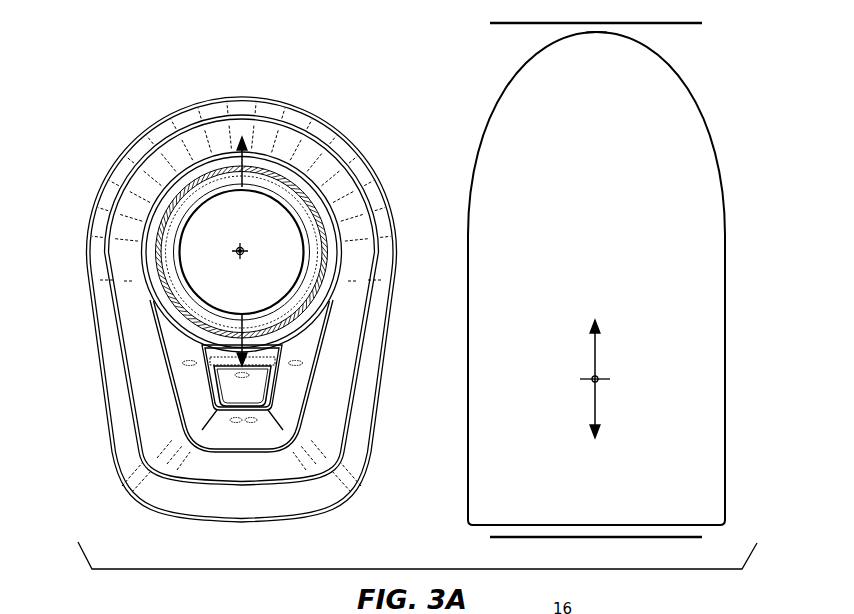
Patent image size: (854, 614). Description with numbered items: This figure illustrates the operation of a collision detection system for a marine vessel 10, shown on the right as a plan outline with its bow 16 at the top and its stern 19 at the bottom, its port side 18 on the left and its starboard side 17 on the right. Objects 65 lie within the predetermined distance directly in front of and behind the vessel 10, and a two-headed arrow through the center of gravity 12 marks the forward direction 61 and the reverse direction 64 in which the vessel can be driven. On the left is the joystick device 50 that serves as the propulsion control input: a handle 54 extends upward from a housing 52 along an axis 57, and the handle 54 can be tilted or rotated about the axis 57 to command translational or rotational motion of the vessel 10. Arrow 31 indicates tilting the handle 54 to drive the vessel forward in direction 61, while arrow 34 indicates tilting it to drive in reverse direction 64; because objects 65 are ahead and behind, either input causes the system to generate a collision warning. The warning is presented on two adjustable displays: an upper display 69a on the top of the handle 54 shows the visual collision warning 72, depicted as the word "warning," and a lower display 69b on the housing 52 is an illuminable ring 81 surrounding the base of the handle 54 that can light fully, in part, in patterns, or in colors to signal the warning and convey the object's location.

The joystick device 50 is at (92, 131).
The handle 54 is at (205, 172).
The housing 52 is at (325, 163).
The arrow 31 is at (257, 159).
The upper display 69a is at (263, 218).
The visual collision warning 72 is at (263, 273).
The axis 57 is at (235, 250).
The lower display 69b is at (157, 213).
The illuminable ring 81 is at (157, 247).
The arrow 34 is at (263, 330).
The marine vessel 10 is at (708, 130).
The bow 16 is at (596, 31).
The objects 65 is at (673, 24).
The left side edge 18 is at (467, 280).
The starboard side 17 is at (726, 280).
The stern 19 is at (588, 527).
The forward direction 61 is at (593, 352).
The reverse direction 64 is at (600, 405).
The center of gravity 12 is at (591, 382).